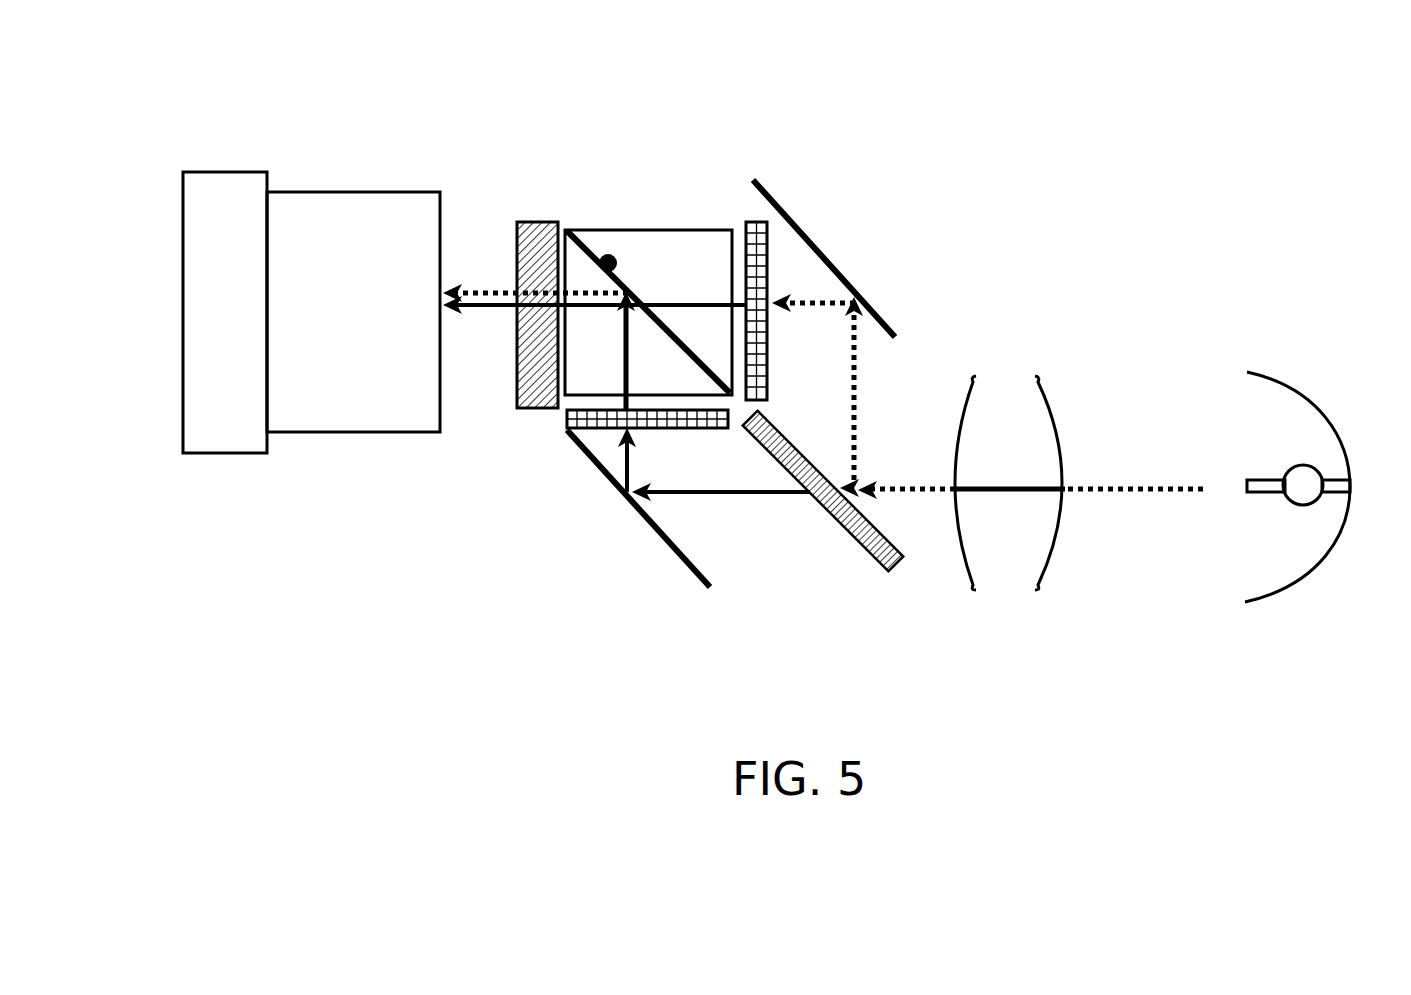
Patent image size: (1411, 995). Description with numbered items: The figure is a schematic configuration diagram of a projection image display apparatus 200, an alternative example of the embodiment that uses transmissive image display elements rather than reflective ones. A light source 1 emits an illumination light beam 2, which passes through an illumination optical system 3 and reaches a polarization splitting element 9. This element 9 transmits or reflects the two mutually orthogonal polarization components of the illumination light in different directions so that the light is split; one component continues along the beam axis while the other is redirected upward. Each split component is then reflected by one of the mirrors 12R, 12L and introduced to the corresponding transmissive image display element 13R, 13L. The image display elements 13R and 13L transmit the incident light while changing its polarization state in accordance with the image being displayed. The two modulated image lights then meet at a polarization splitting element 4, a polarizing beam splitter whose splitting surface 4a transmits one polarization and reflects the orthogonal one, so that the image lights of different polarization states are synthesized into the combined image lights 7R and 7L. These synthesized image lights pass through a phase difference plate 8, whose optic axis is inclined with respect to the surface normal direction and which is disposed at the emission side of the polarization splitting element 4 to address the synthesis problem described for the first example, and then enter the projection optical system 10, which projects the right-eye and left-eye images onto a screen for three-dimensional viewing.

The projection image display apparatus 200 is at (1272, 196).
The light source 1 is at (1312, 482).
The illumination light beam 2 is at (1105, 487).
The illumination optical system 3 is at (1014, 548).
The polarization splitting element 4 is at (642, 250).
The polarization splitting surface 4a is at (606, 256).
The synthesized image light 7L is at (625, 377).
The synthesized image light 7R is at (703, 305).
The phase difference plate 8 is at (517, 222).
The polarization splitting element 9 is at (842, 525).
The projection optical system 10 is at (313, 283).
The mirror 12L is at (663, 543).
The mirror 12R is at (827, 255).
The transmissive image display element 13L is at (610, 418).
The transmissive image display element 13R is at (746, 222).